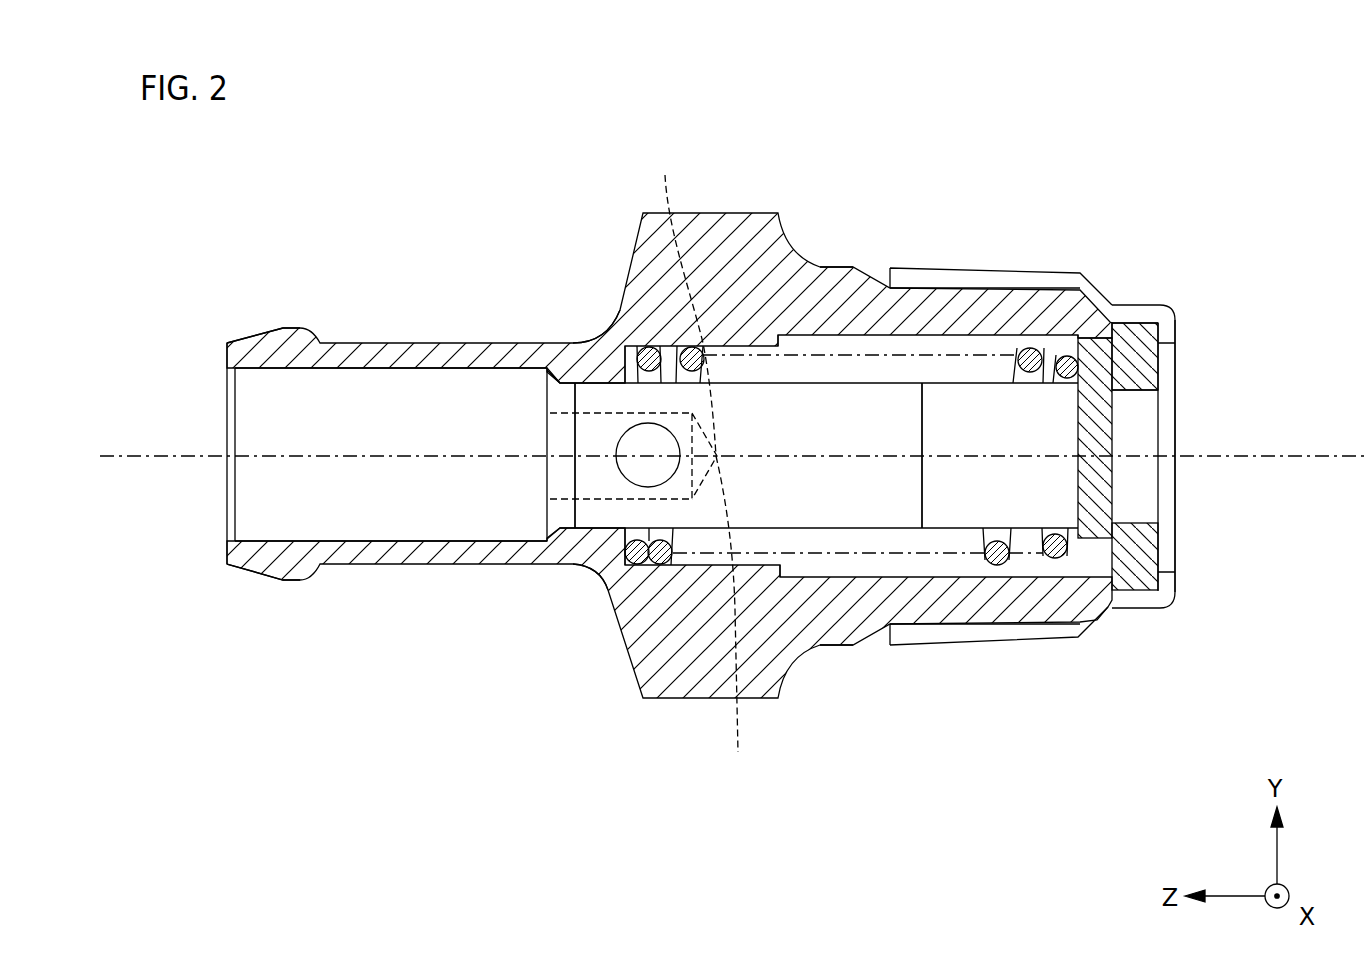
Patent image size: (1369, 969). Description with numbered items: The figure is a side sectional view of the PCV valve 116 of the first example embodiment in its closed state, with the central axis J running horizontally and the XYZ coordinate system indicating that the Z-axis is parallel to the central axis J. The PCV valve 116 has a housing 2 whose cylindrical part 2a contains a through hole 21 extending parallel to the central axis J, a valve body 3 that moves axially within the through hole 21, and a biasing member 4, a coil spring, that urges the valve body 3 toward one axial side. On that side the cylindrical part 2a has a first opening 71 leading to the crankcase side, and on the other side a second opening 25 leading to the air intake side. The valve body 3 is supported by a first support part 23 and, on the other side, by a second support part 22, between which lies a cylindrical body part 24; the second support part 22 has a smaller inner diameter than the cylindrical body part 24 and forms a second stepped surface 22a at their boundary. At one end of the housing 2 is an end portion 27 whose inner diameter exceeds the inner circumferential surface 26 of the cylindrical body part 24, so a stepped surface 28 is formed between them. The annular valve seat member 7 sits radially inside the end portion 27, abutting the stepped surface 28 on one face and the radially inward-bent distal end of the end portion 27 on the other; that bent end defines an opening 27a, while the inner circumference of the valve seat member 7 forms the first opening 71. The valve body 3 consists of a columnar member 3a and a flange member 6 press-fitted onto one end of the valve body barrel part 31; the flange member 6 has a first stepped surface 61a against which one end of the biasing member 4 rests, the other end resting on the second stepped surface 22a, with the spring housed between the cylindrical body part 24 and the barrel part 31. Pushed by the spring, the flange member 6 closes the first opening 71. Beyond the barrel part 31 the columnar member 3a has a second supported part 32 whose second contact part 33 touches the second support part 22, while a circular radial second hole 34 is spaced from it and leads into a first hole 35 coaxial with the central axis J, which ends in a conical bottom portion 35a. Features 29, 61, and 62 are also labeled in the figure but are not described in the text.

The housing 2 is at (721, 228).
The cylindrical part 2a is at (813, 315).
The valve body 3 is at (897, 508).
The columnar member 3a is at (912, 508).
The biasing member 4 is at (1028, 340).
The flange member 6 is at (1115, 497).
The valve seat member 7 is at (1157, 320).
The through hole 21 is at (417, 383).
The second support part 22 is at (583, 357).
The second stepped surface 22a is at (626, 345).
The first support part 23 is at (1082, 322).
The cylindrical body part 24 is at (850, 315).
The second opening 25 is at (257, 541).
The inner circumferential surface 26 is at (1113, 556).
The end portion 27 is at (1172, 334).
The opening 27a is at (1177, 354).
The stepped surface 28 is at (1152, 600).
The seat face 29 is at (1132, 322).
The valve body barrel part 31 is at (842, 503).
The second supported part 32 is at (627, 510).
The second contact part 33 is at (577, 508).
The second hole 34 is at (660, 468).
The first hole 35 is at (686, 300).
The bottom portion 35a is at (744, 621).
The plate 61 is at (1093, 352).
The first stepped surface 61a is at (1048, 340).
The block 62 is at (1112, 556).
The first opening 71 is at (1145, 390).
The PCV valve 116 is at (1148, 86).
The central axis J is at (136, 456).